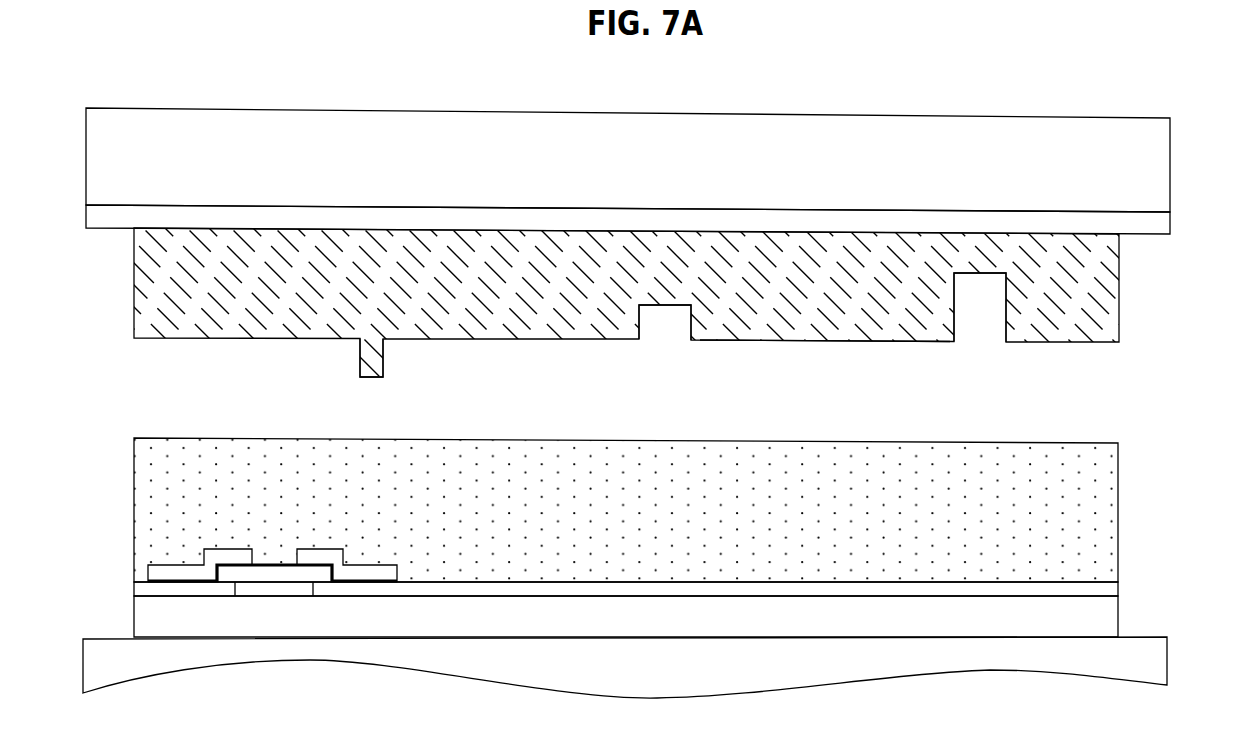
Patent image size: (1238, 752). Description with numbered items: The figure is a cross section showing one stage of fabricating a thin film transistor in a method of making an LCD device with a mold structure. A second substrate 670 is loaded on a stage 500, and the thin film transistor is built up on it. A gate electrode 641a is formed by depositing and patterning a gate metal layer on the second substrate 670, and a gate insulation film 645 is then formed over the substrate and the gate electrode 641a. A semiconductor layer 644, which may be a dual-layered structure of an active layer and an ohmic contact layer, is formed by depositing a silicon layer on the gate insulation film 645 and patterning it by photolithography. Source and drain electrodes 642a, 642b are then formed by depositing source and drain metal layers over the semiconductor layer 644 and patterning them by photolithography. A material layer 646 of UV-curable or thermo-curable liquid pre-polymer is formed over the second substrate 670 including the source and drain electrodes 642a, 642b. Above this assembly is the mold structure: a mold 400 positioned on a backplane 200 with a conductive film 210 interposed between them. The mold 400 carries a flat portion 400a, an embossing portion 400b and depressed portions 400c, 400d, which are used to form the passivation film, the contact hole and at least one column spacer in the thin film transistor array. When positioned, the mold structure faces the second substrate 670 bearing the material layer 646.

The backplane 200 is at (1162, 165).
The conductive film 210 is at (1162, 224).
The mold 400 is at (1116, 259).
The flat portion 400a is at (823, 341).
The embossing portion 400b is at (363, 361).
The depressed portion 400c is at (975, 328).
The depressed portion 400d is at (664, 327).
The stage 500 is at (1158, 663).
The gate electrode 641a is at (258, 592).
The source electrode 642a is at (165, 575).
The drain electrode 642b is at (382, 573).
The semiconductor layer 644 is at (335, 583).
The gate insulation film 645 is at (467, 592).
The material layer 646 is at (1113, 523).
The second substrate 670 is at (1113, 606).